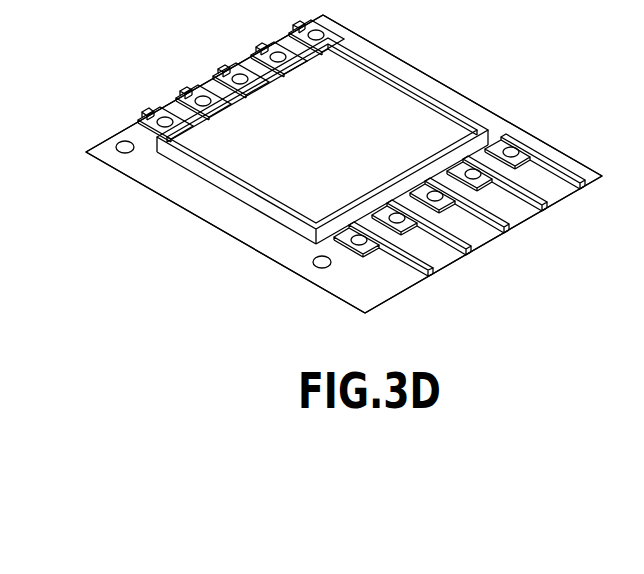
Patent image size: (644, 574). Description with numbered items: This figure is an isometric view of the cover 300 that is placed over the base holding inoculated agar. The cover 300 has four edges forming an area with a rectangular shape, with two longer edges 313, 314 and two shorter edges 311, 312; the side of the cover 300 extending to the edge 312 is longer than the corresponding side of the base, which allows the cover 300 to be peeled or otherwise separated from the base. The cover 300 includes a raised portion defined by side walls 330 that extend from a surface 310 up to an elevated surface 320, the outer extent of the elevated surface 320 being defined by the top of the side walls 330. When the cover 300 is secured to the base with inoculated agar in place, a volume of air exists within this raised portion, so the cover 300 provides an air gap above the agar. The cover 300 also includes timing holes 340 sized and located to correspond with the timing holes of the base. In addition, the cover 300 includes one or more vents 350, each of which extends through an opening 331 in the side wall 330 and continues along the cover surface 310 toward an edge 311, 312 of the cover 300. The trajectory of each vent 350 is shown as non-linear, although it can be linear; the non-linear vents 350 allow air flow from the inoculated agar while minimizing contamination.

The cover 300 is at (541, 238).
The surface 310 is at (137, 173).
The edge 311 is at (120, 130).
The edge 312 is at (383, 297).
The edge 313 is at (223, 234).
The edge 314 is at (373, 44).
The elevated surface 320 is at (267, 110).
The side walls 330 is at (193, 163).
The opening 331 is at (495, 126).
The timing holes 340 is at (312, 263).
The vents 350 is at (553, 168).